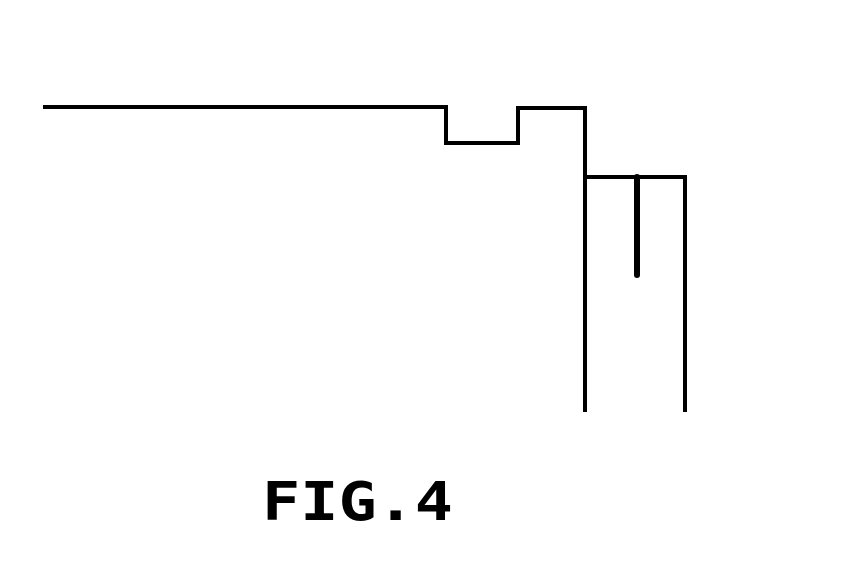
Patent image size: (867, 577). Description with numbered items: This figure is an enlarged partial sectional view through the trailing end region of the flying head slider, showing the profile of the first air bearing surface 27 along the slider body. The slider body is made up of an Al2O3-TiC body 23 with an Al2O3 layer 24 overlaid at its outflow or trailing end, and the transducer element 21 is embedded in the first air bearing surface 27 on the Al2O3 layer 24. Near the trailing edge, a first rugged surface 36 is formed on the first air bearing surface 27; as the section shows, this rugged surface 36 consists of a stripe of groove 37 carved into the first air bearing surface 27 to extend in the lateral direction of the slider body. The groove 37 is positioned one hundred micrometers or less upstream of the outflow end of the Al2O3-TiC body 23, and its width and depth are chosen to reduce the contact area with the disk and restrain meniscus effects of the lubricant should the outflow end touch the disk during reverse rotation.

The first air bearing surface 27 is at (165, 106).
The first rugged surface 36 is at (417, 78).
The groove 37 is at (517, 127).
The Al2O3-TiC body 23 is at (577, 107).
The transducer element 21 is at (642, 197).
The Al2O3 layer 24 is at (685, 278).